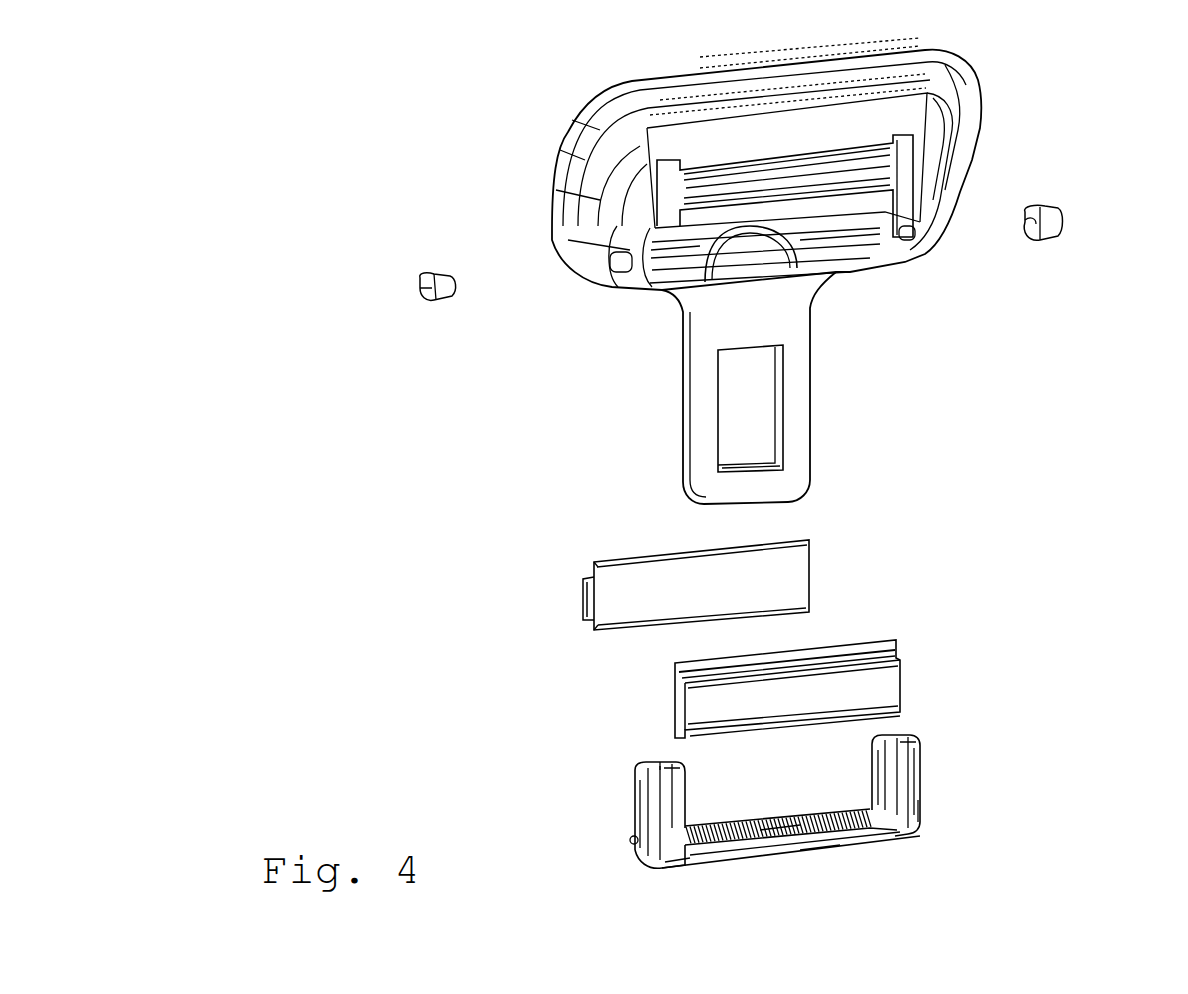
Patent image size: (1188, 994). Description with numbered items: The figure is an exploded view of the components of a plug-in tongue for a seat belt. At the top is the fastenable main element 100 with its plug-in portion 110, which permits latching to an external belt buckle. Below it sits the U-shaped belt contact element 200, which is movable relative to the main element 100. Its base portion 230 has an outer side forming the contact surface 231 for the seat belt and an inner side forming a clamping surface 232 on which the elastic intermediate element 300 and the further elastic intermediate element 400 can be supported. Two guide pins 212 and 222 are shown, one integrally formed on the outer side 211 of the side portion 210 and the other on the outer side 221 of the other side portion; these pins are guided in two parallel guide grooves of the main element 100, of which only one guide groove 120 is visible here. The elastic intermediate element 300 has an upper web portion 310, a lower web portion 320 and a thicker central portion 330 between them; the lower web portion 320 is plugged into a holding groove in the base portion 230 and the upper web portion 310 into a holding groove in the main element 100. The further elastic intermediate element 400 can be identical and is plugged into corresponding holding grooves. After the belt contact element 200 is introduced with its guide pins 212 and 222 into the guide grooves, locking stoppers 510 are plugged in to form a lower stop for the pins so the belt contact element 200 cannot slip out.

The main element 100 is at (965, 118).
The plug-in portion 110 is at (795, 412).
The guide groove 120 is at (908, 242).
The locking stopper 510 is at (421, 300).
The elastic intermediate element 300 is at (795, 578).
The upper web portion 310 is at (608, 558).
The lower web portion 320 is at (592, 633).
The central portion 330 is at (583, 595).
The further elastic intermediate element 400 is at (897, 680).
The belt contact element 200 is at (905, 830).
The side portion 210 is at (667, 772).
The outer side 211 is at (636, 793).
The guide pin 212 is at (630, 840).
The outer side 221 is at (923, 760).
The guide pin 222 is at (922, 813).
The base portion 230 is at (688, 853).
The contact surface 231 is at (827, 845).
The clamping surface 232 is at (783, 817).